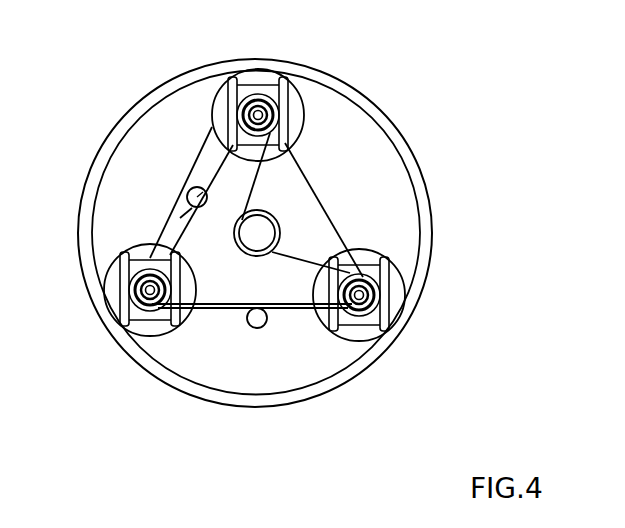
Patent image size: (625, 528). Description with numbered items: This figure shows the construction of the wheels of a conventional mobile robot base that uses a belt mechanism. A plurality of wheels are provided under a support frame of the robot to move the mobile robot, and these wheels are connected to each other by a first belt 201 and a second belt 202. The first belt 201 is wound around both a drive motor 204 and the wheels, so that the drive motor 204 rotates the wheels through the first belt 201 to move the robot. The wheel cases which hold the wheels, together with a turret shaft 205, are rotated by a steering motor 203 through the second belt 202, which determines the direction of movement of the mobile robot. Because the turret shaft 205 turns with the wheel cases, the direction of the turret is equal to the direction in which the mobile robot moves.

The first belt 201 is at (180, 212).
The second belt 202 is at (222, 306).
The steering motor 203 is at (197, 188).
The drive motor 204 is at (264, 325).
The turret shaft 205 is at (260, 233).